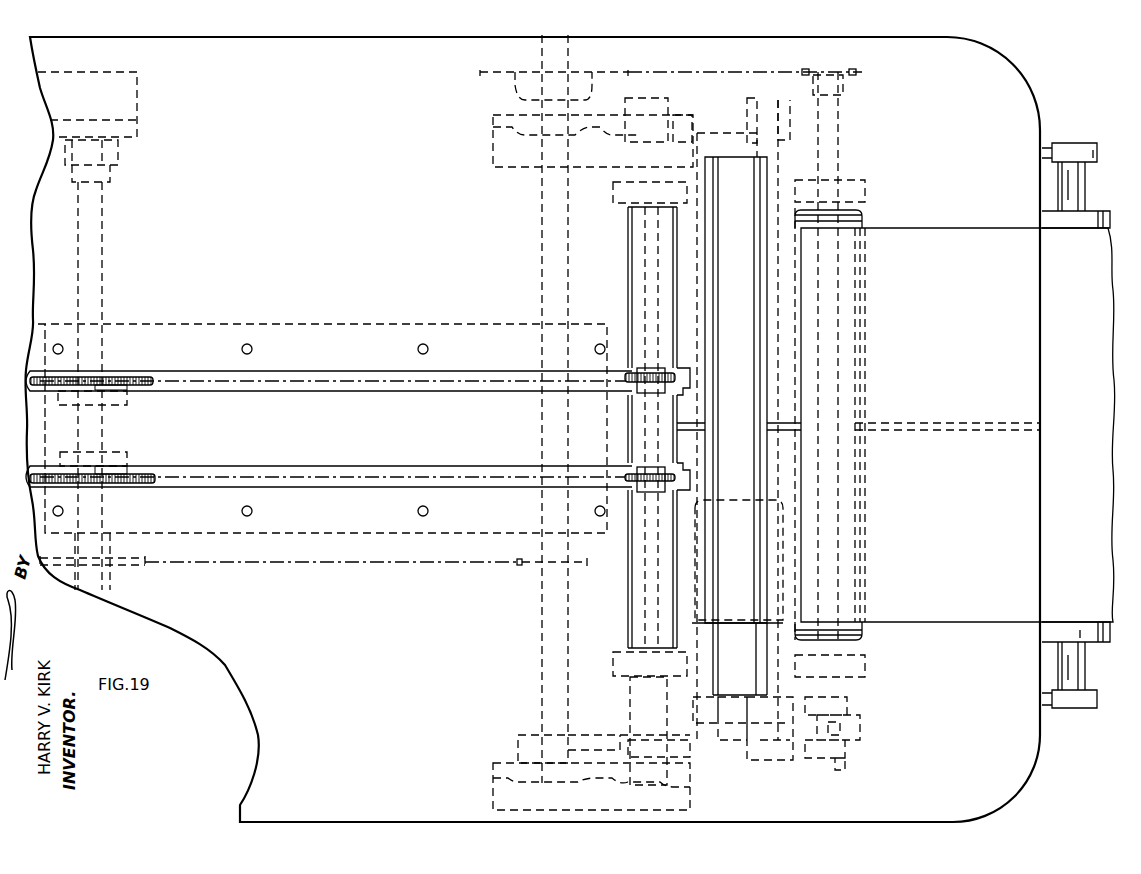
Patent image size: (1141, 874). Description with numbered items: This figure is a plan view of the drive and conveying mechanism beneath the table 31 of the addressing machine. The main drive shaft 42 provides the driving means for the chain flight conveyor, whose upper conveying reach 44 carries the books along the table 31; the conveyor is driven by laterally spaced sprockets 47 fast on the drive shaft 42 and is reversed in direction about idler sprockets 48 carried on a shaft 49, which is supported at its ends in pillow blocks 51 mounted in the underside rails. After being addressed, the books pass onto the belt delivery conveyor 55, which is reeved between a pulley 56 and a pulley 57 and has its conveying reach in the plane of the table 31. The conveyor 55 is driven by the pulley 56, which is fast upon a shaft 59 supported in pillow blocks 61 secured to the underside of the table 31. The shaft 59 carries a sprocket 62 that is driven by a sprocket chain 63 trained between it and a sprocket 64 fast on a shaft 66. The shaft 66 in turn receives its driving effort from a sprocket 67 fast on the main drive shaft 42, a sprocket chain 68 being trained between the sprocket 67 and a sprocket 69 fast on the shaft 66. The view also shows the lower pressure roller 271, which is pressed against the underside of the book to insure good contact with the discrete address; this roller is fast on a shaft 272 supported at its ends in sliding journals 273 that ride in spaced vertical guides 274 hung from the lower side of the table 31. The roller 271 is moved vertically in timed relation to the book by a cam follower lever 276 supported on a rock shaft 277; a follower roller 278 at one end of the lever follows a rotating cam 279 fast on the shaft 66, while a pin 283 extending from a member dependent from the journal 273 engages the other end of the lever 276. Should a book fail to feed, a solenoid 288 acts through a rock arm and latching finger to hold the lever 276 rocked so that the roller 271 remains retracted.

The table 31 is at (343, 342).
The shaft 42 is at (105, 315).
The upper conveying reach 44 is at (195, 378).
The sprockets 47 is at (128, 376).
The idler sprockets 48 is at (640, 388).
The shaft 49 is at (632, 280).
The pillow blocks 51 is at (598, 165).
The belt delivery conveyor 55 is at (944, 507).
The pulley 56 is at (860, 220).
The pulley 57 is at (1090, 216).
The shaft 59 is at (840, 143).
The pillow blocks 61 is at (843, 180).
The sprocket 62 is at (858, 72).
The sprocket chain 63 is at (750, 72).
The sprocket 64 is at (585, 72).
The shaft 66 is at (540, 630).
The sprocket 67 is at (125, 570).
The sprocket chain 68 is at (380, 565).
The sprocket 69 is at (520, 568).
The lower pressure roller 271 is at (733, 625).
The shaft 272 is at (752, 461).
The sliding journals 273 is at (762, 136).
The vertical guides 274 is at (773, 152).
The cam follower lever 276 is at (576, 728).
The rock shaft 277 is at (632, 718).
The follower roller 278 is at (518, 735).
The cam 279 is at (493, 772).
The pin 283 is at (735, 762).
The solenoid 288 is at (848, 705).